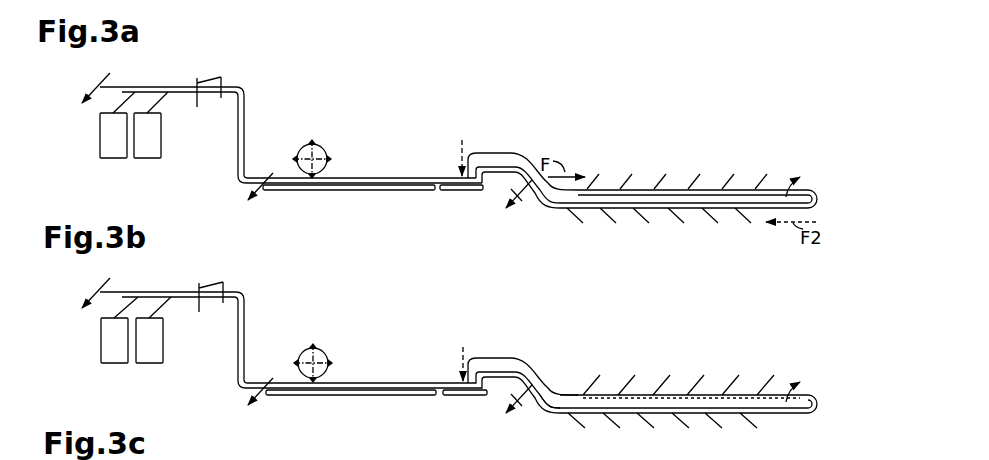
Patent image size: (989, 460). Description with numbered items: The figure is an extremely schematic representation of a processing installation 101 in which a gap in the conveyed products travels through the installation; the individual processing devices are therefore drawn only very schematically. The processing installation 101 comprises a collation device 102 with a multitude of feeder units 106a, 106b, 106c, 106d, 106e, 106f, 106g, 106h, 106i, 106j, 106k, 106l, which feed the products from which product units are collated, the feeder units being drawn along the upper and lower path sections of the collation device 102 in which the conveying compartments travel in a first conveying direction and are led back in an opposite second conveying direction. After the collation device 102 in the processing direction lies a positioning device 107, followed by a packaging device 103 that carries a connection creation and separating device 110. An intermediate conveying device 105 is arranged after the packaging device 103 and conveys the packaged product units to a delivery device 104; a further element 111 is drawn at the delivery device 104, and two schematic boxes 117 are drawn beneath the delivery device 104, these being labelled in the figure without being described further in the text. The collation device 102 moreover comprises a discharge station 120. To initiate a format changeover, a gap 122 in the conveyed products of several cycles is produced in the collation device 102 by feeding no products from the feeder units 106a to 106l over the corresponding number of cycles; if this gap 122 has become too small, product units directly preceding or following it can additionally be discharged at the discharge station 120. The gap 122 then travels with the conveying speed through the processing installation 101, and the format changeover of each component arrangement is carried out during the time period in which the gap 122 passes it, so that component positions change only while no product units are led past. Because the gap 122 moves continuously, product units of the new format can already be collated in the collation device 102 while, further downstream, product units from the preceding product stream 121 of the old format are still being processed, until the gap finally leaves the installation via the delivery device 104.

In FIG. 3a, the processing installation 101 is at (527, 86).
In FIG. 3b, the processing installation 101 is at (440, 352).
In FIG. 3a, the collation device 102 is at (711, 186).
In FIG. 3a, the packaging device 103 is at (355, 175).
In FIG. 3a, the delivery device 104 is at (158, 82).
In FIG. 3a, the intermediate conveying device 105 is at (250, 113).
In FIG. 3a, the feeder unit 106a is at (593, 181).
In FIG. 3a, the feeder unit 106b is at (626, 181).
In FIG. 3a, the feeder unit 106c is at (660, 181).
In FIG. 3a, the feeder unit 106d is at (694, 181).
In FIG. 3a, the feeder unit 106e is at (729, 181).
In FIG. 3a, the feeder unit 106f is at (763, 181).
In FIG. 3a, the feeder unit 106g is at (581, 223).
In FIG. 3a, the feeder unit 106h is at (614, 223).
In FIG. 3a, the feeder unit 106i is at (648, 223).
In FIG. 3a, the feeder unit 106j is at (683, 223).
In FIG. 3a, the feeder unit 106k is at (717, 224).
In FIG. 3a, the feeder unit 106l is at (751, 224).
In FIG. 3a, the positioning device 107 is at (452, 191).
In FIG. 3a, the connection creation and separating device 110 is at (314, 156).
In FIG. 3a, the tab 111 is at (223, 78).
In FIG. 3a, the clips 117 is at (111, 151).
In FIG. 3a, the discharge station 120 is at (509, 191).
In FIG. 3a, the preceding product stream 121 is at (413, 176).
In FIG. 3b, the preceding product stream 121 is at (551, 414).
In FIG. 3b, the gap in the conveyed products 122 is at (673, 398).